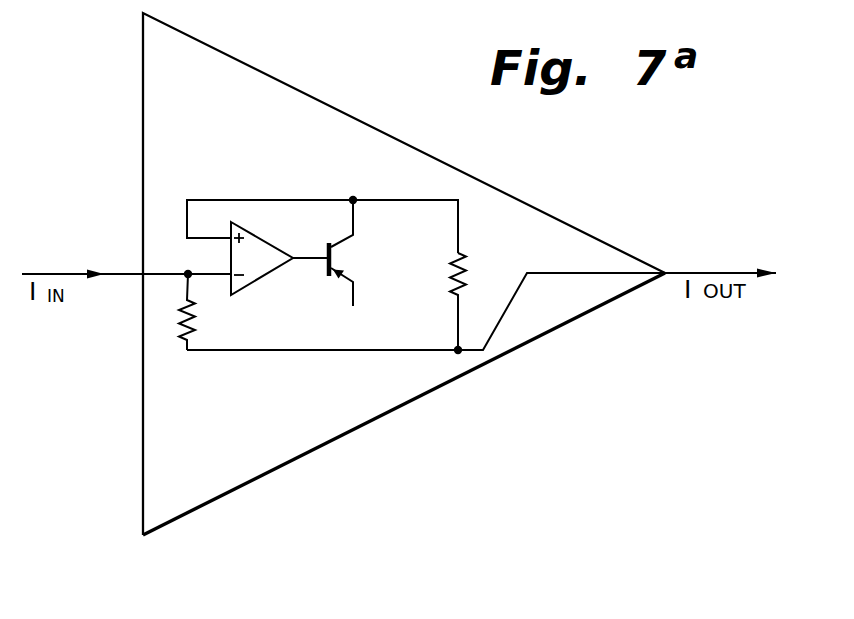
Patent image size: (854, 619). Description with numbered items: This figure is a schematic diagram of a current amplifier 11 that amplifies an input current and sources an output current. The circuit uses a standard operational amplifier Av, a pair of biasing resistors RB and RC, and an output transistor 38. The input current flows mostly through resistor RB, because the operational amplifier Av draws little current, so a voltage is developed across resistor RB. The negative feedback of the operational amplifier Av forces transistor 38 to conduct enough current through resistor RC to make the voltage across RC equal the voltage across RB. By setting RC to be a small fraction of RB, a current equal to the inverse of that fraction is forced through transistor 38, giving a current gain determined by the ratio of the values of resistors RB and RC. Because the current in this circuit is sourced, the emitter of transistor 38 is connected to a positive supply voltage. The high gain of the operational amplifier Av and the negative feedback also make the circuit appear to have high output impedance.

The current amplifier 11 is at (404, 274).
The output transistor 38 is at (344, 263).
The operational amplifier Av is at (240, 258).
The biasing resistor RB is at (207, 312).
The biasing resistor RC is at (476, 295).